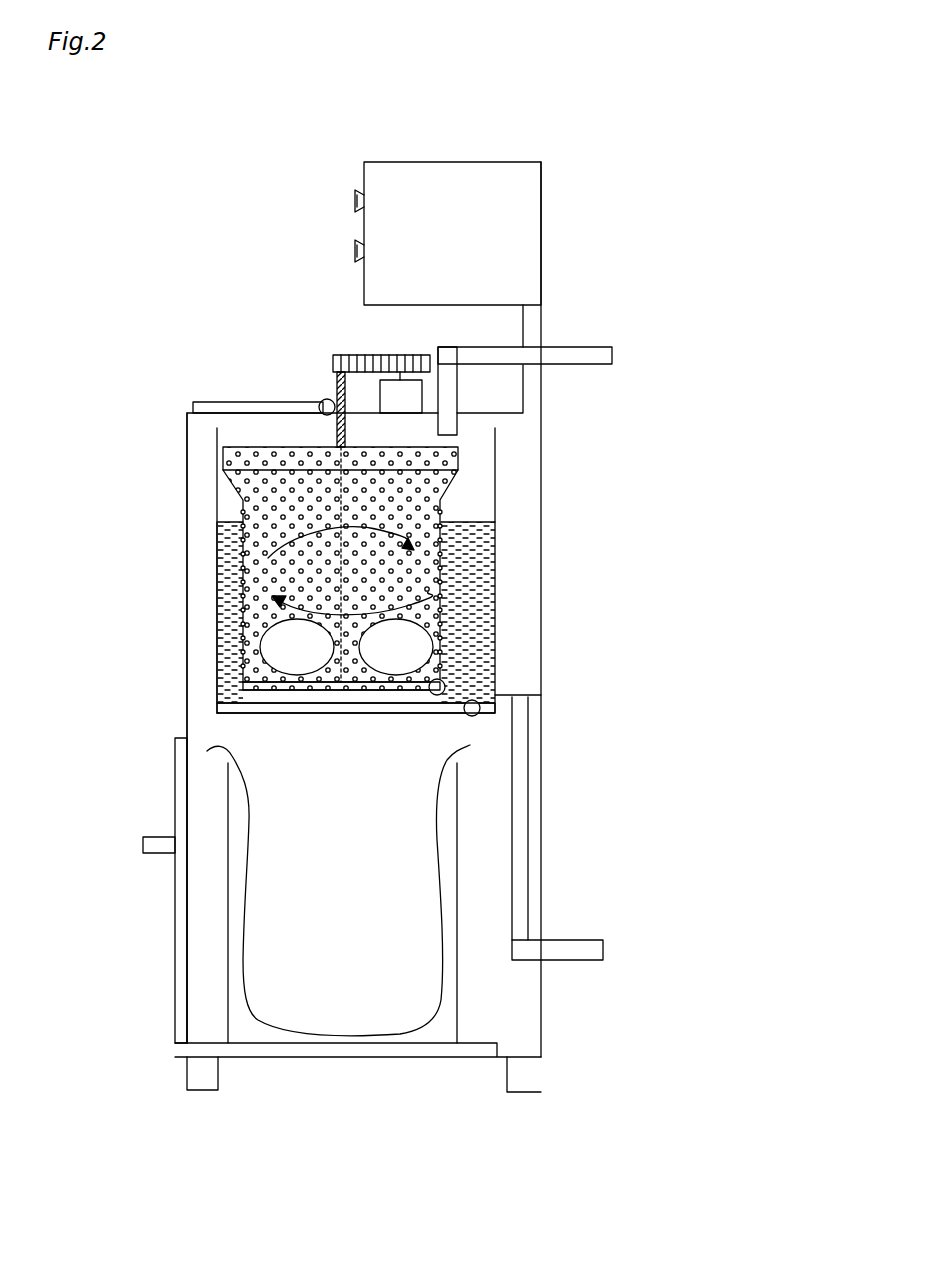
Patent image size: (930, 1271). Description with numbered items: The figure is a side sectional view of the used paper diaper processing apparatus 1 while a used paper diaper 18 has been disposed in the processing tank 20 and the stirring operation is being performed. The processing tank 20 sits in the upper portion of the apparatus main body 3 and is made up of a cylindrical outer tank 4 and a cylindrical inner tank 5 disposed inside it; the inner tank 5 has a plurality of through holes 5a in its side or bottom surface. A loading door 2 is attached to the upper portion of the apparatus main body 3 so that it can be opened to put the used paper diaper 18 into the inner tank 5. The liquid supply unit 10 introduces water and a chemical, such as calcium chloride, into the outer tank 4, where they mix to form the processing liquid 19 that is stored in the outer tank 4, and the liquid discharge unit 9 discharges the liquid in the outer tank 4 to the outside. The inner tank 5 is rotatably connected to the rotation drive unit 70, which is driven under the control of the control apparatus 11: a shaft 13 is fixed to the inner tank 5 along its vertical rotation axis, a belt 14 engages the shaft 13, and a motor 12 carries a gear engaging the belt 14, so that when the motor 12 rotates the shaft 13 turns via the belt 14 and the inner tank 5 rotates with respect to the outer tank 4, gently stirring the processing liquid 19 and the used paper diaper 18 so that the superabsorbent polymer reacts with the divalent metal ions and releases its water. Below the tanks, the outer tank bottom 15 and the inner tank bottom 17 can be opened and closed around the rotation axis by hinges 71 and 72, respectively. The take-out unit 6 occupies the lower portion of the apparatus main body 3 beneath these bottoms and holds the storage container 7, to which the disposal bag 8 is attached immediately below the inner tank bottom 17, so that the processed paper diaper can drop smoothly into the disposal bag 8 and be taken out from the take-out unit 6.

The used paper diaper processing apparatus 1 is at (144, 223).
The loading door 2 is at (207, 402).
The apparatus main body 3 is at (187, 462).
The outer tank 4 is at (216, 572).
The inner tank 5 is at (228, 626).
The through holes 5a is at (427, 555).
The take-out unit 6 is at (175, 778).
The storage container 7 is at (228, 930).
The disposal bag 8 is at (252, 848).
The liquid discharge unit 9 is at (541, 688).
The liquid supply unit 10 is at (612, 348).
The control apparatus 11 is at (541, 222).
The motor 12 is at (422, 393).
The shaft 13 is at (328, 380).
The belt 14 is at (392, 355).
The outer tank bottom 15 is at (393, 713).
The inner tank bottom 17 is at (288, 690).
The used paper diaper 18 is at (422, 645).
The processing liquid 19 is at (495, 578).
The processing tank 20 is at (228, 660).
The rotation drive unit 70 is at (408, 338).
The hinge 71 is at (480, 713).
The hinge 72 is at (445, 682).